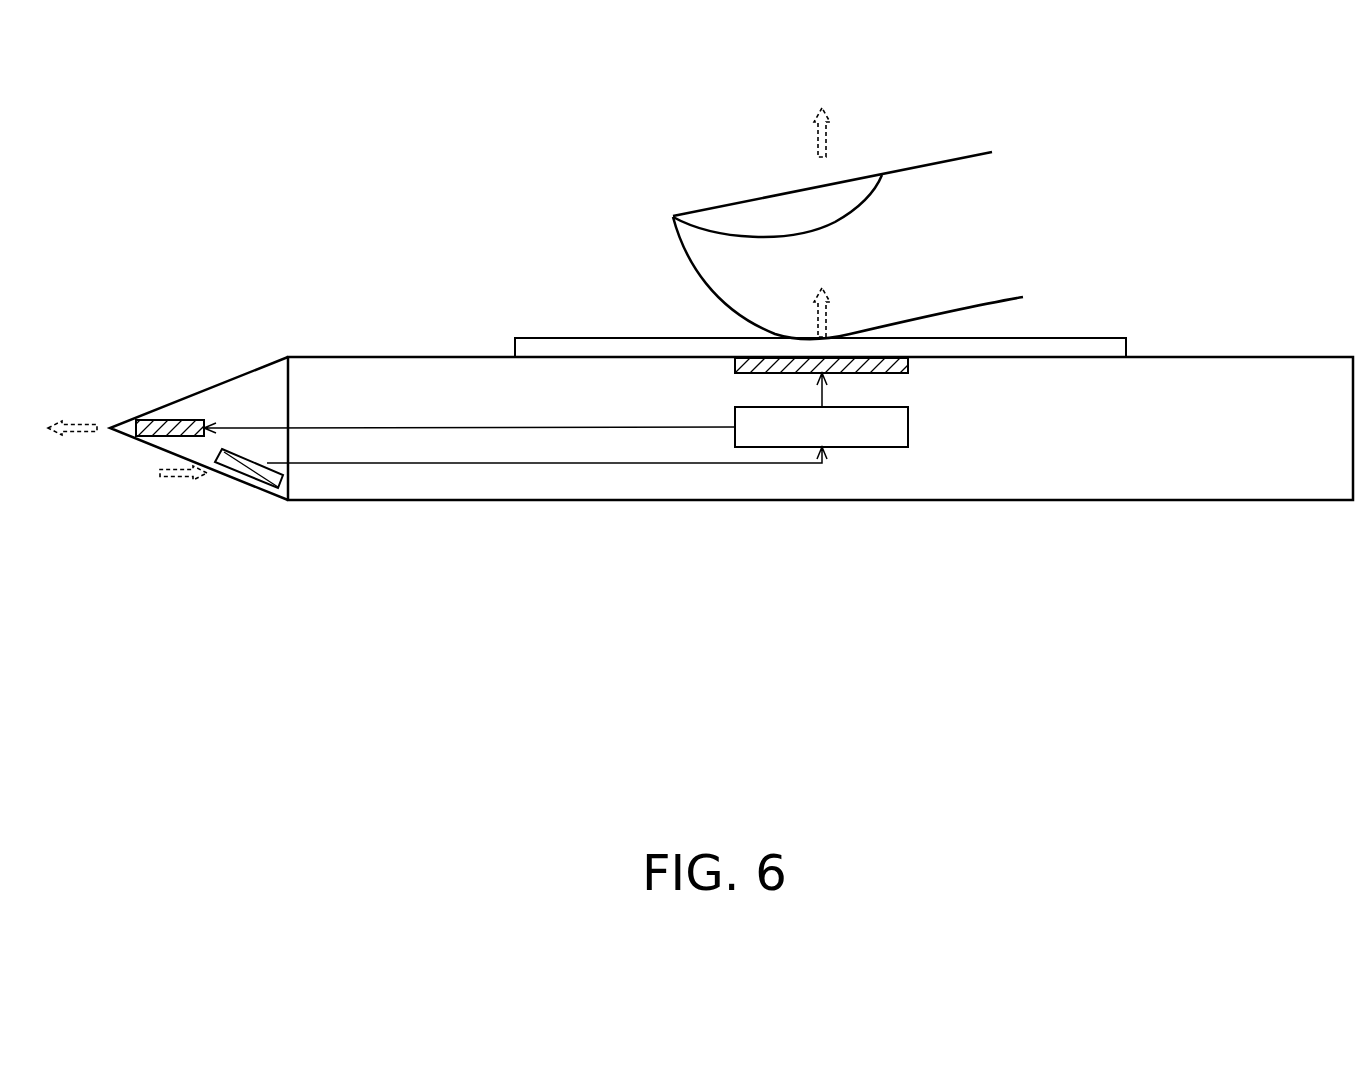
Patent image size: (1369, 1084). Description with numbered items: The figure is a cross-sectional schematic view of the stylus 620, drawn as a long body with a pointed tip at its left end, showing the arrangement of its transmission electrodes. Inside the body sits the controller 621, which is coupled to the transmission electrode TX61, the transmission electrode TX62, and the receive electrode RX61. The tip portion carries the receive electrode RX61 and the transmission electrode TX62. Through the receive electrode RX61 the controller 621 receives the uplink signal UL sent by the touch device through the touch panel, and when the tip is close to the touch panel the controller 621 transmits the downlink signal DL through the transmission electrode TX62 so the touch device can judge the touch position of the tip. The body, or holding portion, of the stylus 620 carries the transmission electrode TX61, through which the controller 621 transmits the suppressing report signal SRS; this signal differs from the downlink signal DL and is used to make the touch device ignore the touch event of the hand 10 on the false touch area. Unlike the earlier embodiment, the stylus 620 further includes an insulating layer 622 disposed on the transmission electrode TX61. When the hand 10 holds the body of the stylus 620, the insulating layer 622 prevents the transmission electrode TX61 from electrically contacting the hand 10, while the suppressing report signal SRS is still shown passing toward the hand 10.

The hand 10 is at (728, 205).
The stylus 620 is at (822, 500).
The controller 621 is at (908, 427).
The insulating layer 622 is at (582, 338).
The transmission electrode TX61 is at (735, 362).
The transmission electrode TX62 is at (172, 420).
The receive electrode RX61 is at (250, 486).
The suppressing report signal SRS is at (828, 130).
The downlink signal DL is at (77, 420).
The uplink signal UL is at (175, 481).